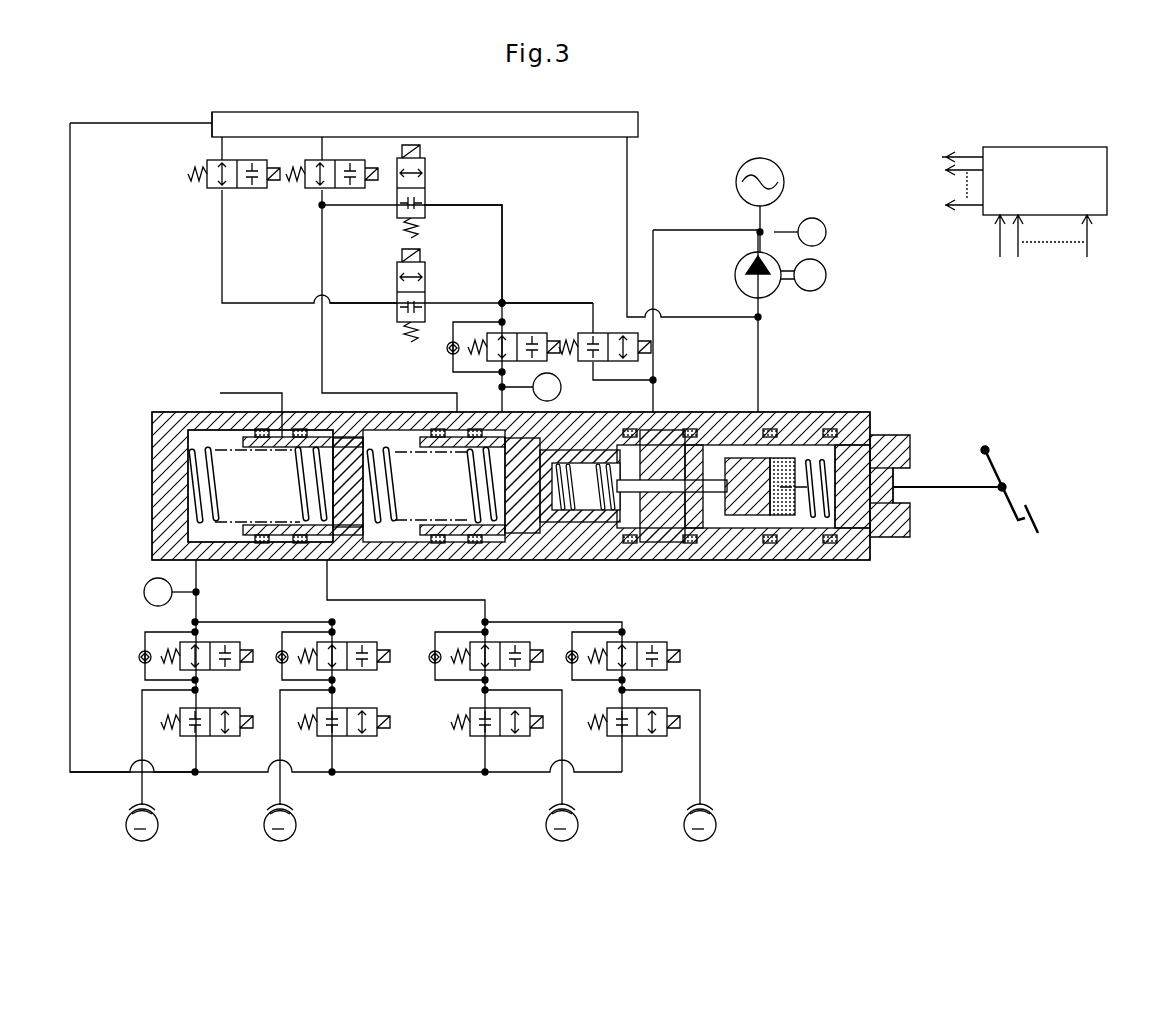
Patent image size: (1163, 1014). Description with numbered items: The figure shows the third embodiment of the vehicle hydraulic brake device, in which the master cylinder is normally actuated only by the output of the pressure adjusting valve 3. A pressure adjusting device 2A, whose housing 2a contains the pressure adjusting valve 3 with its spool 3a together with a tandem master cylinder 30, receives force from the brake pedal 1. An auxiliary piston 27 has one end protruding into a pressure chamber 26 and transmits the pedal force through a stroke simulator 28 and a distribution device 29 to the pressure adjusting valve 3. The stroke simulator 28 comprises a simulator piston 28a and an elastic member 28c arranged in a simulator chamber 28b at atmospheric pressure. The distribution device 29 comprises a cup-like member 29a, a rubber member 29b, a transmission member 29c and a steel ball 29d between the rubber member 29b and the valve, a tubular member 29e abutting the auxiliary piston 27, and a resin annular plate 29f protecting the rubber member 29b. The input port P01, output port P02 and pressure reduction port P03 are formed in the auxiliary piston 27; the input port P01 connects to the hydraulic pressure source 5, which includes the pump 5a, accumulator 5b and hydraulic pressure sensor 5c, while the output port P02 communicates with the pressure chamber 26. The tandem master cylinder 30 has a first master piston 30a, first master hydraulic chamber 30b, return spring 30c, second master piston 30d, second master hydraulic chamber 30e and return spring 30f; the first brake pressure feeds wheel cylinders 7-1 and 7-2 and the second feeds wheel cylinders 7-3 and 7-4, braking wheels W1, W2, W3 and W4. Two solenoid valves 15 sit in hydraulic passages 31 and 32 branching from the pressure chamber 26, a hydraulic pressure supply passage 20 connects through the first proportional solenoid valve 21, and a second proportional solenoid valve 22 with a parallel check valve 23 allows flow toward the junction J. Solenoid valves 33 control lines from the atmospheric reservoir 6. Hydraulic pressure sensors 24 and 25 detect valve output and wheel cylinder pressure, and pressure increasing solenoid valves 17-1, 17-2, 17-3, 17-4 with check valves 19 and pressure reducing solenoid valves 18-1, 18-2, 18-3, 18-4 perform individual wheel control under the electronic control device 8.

The brake pedal 1 is at (1035, 520).
The housing 2a is at (793, 412).
The pressure adjusting device 2A is at (517, 460).
The pressure adjusting valve 3 is at (595, 530).
The spool 3a is at (565, 522).
The hydraulic pressure source 5 is at (812, 200).
The pump 5a is at (772, 292).
The accumulator 5b is at (775, 178).
The hydraulic pressure sensor 5c is at (826, 233).
The atmospheric reservoir 6 is at (638, 113).
The wheel cylinder 7-1 is at (690, 806).
The wheel cylinder 7-2 is at (552, 806).
The wheel cylinder 7-3 is at (270, 806).
The wheel cylinder 7-4 is at (133, 806).
The electronic control device 8 is at (1035, 207).
The solenoid valve 15 is at (427, 182).
The pressure increasing solenoid valve 17-1 is at (660, 670).
The pressure increasing solenoid valve 17-2 is at (515, 640).
The pressure increasing solenoid valve 17-3 is at (352, 670).
The pressure increasing solenoid valve 17-4 is at (228, 642).
The pressure reducing solenoid valve 18-1 is at (655, 735).
The pressure reducing solenoid valve 18-2 is at (515, 735).
The pressure reducing solenoid valve 18-3 is at (370, 735).
The pressure reducing solenoid valve 18-4 is at (230, 735).
The check valve 19 is at (575, 665).
The hydraulic pressure supply passage 20 is at (572, 303).
The first proportional solenoid valve 21 is at (600, 332).
The second proportional solenoid valve 22 is at (507, 332).
The check valve 23 is at (447, 350).
The hydraulic pressure sensor 24 is at (556, 398).
The hydraulic pressure sensor 25 is at (148, 580).
The pressure chamber 26 is at (527, 540).
The auxiliary piston 27 is at (905, 432).
The stroke simulator 28 is at (1050, 560).
The simulator piston 28a is at (895, 495).
The simulator chamber 28b is at (875, 527).
The elastic member 28c is at (878, 557).
The distribution device 29 is at (906, 600).
The cup-like member 29a is at (850, 540).
The rubber member 29b is at (810, 540).
The transmission member 29c is at (745, 530).
The steel ball 29d is at (700, 545).
The tubular member 29e is at (662, 550).
The resin annular plate 29f is at (775, 530).
The tandem master cylinder 30 is at (318, 422).
The first master piston 30a is at (492, 535).
The first master hydraulic chamber 30b is at (375, 545).
The return spring 30c is at (395, 520).
The second master piston 30d is at (348, 455).
The second master hydraulic chamber 30e is at (212, 440).
The return spring 30f is at (186, 476).
The hydraulic passage 31 is at (503, 218).
The hydraulic passage 32 is at (365, 302).
The solenoid valve 33 is at (212, 192).
The junction J is at (497, 301).
The input port P01 is at (668, 430).
The output port P02 is at (610, 445).
The pressure reduction port P03 is at (700, 440).
The vehicle wheel W1 is at (708, 830).
The vehicle wheel W2 is at (555, 830).
The vehicle wheel W3 is at (290, 830).
The vehicle wheel W4 is at (135, 830).